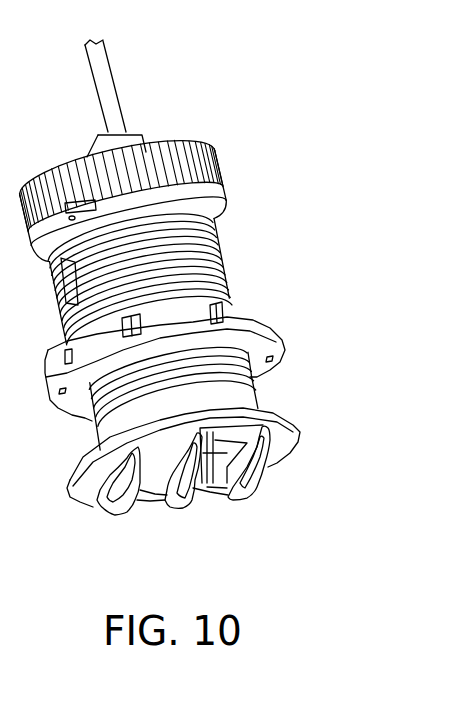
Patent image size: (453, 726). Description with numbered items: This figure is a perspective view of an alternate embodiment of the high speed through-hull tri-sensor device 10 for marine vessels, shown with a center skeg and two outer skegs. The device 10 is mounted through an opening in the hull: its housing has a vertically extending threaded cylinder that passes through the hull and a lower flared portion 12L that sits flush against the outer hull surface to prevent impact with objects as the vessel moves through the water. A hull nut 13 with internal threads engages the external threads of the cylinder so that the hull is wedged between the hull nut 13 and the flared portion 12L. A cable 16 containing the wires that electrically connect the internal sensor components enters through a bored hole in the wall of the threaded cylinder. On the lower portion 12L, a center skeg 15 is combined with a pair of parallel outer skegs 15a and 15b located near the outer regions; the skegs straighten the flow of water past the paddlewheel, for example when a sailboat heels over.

The high speed through-hull tri-sensor device 10 is at (245, 248).
The lower flared portion 12L is at (297, 423).
The hull nut 13 is at (268, 324).
The skeg 15 is at (177, 503).
The skeg 15a is at (115, 517).
The skeg 15b is at (258, 488).
The cable 16 is at (117, 82).